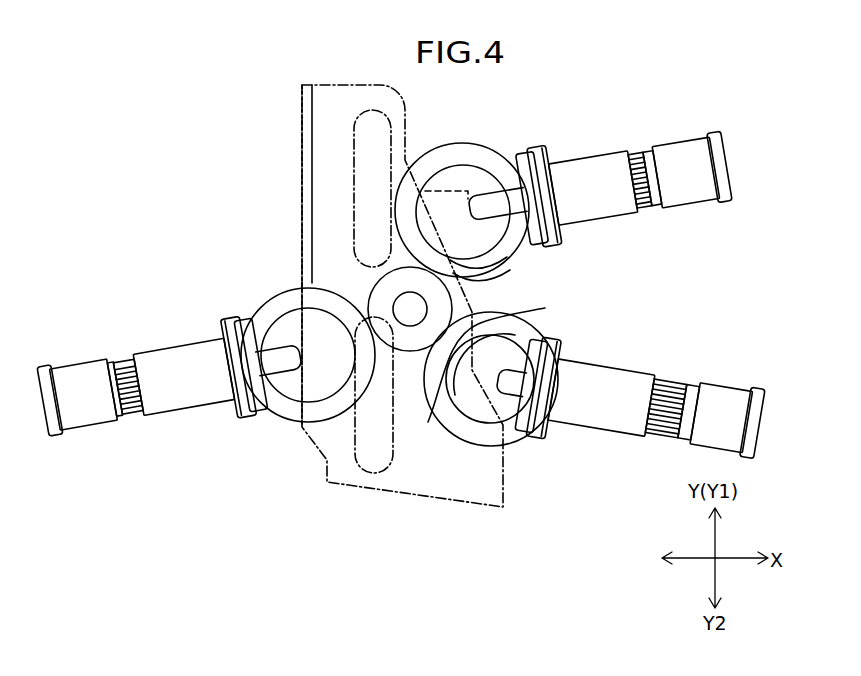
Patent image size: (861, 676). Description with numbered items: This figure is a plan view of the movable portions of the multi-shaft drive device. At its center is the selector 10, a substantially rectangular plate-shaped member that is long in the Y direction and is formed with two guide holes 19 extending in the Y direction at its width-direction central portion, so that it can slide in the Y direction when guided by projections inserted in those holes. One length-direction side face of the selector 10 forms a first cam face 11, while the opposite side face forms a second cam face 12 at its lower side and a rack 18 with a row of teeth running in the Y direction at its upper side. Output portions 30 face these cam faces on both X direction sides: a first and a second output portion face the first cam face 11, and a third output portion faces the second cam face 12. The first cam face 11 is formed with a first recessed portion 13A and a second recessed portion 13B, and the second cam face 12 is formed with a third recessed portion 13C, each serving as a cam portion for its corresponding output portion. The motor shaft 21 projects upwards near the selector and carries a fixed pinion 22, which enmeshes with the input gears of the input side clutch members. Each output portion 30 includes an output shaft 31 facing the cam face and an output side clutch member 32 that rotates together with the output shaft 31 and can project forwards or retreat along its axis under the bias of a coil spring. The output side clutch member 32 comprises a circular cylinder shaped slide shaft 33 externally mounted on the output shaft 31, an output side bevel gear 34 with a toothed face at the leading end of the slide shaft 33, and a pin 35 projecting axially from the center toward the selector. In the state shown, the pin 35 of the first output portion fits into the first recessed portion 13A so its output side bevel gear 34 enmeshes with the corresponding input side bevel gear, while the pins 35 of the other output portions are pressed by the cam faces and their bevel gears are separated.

The selector 10 is at (452, 505).
The first cam face 11 is at (520, 312).
The second cam face 12 is at (300, 393).
The first recessed portion 13A is at (540, 342).
The second recessed portion 13B is at (505, 270).
The third recessed portion 13C is at (323, 455).
The rack 18 is at (300, 128).
The guide hole 19 is at (375, 142).
The motor shaft 21 is at (462, 300).
The pinion 22 is at (312, 282).
The output portion 30 is at (401, 302).
The output shaft 31 is at (697, 188).
The output side clutch member 32 is at (620, 218).
The slide shaft 33 is at (575, 185).
The output side bevel gear 34 is at (524, 183).
The pin 35 is at (485, 170).